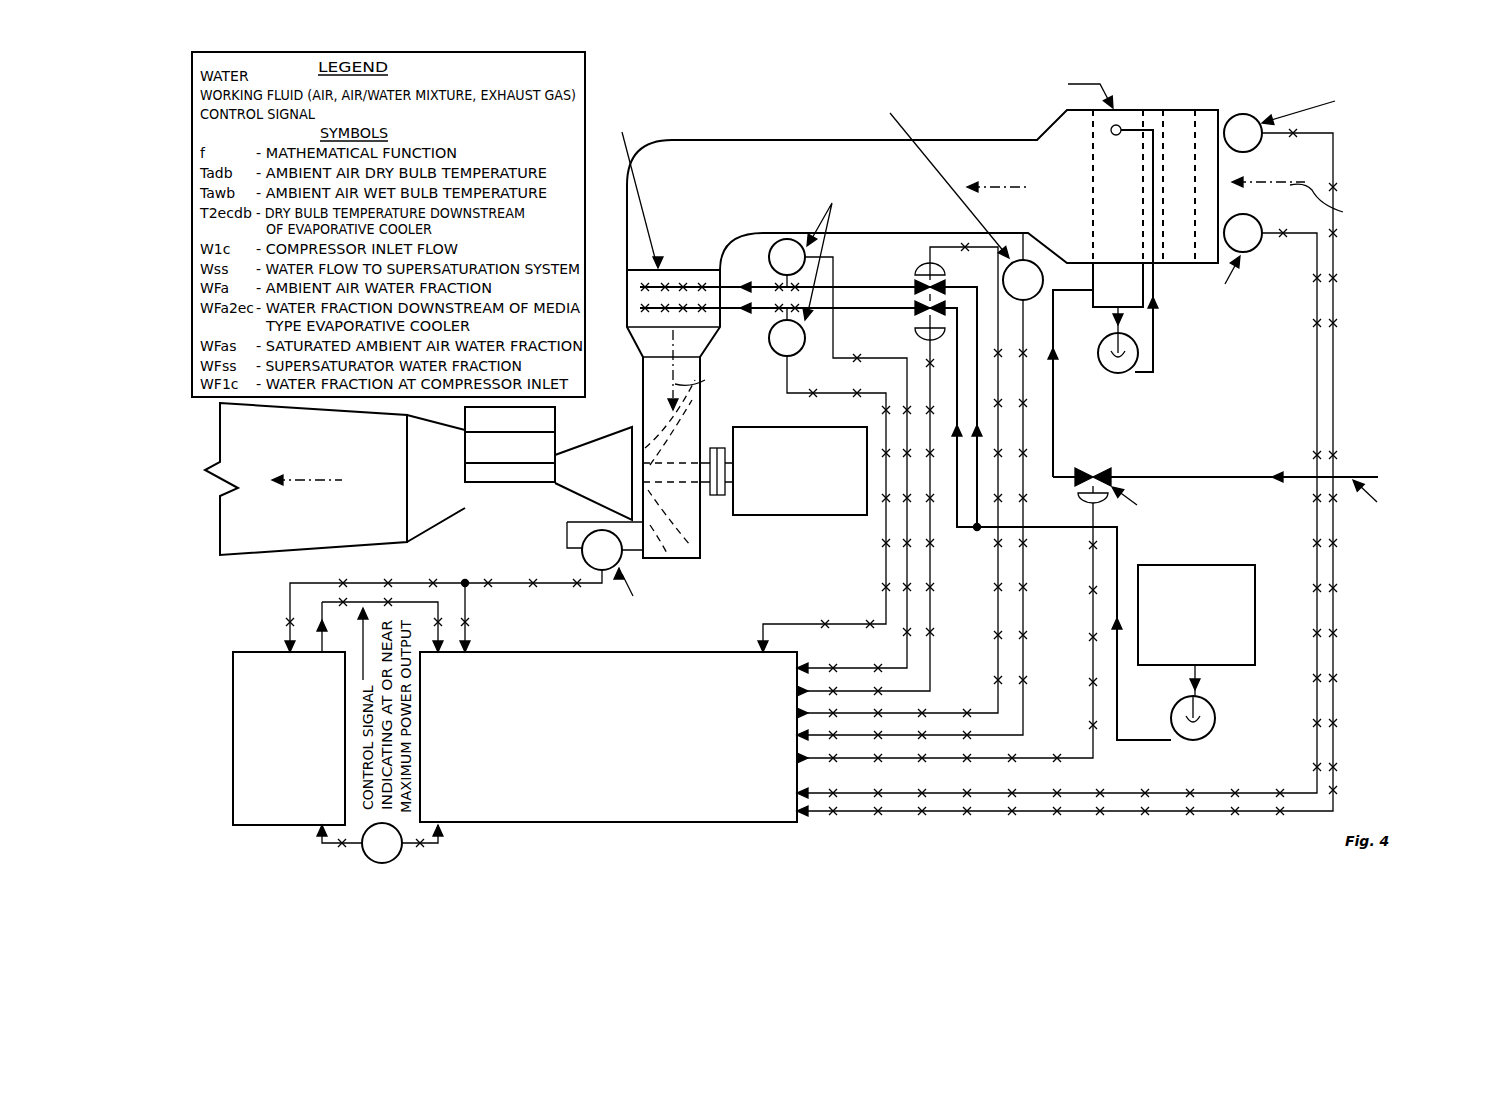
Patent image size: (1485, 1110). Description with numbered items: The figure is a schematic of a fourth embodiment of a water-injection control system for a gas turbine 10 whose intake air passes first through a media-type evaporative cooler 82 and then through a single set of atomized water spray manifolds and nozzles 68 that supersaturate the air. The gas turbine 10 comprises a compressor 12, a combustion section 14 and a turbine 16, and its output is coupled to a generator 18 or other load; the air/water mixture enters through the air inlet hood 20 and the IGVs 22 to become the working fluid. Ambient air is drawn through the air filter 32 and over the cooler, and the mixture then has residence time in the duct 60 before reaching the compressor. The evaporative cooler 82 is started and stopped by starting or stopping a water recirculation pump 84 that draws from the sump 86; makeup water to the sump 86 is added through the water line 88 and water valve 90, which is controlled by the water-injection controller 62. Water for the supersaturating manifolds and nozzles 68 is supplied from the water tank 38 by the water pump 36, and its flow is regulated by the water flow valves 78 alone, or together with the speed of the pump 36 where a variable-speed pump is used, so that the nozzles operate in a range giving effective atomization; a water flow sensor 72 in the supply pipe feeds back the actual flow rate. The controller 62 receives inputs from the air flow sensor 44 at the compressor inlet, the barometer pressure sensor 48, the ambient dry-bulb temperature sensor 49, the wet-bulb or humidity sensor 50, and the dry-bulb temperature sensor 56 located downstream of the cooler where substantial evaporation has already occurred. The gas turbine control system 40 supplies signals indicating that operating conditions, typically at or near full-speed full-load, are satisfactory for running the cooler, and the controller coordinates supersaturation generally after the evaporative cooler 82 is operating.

The gas turbine 10 is at (418, 479).
The compressor 12 is at (608, 478).
The combustion section 14 is at (520, 451).
The turbine 16 is at (446, 487).
The generator 18 is at (815, 509).
The air inlet hood 20 is at (702, 546).
The IGVs 22 is at (645, 433).
The air filter 32 is at (1182, 120).
The water pump 36 is at (1216, 718).
The water tank 38 is at (1206, 659).
The gas turbine control system 40 is at (305, 804).
The air flow sensor 44 is at (622, 565).
The barometer pressure sensor 48 is at (398, 852).
The dry-bulb temperature sensor 49 is at (1238, 114).
The wet-bulb temperature sensor 50 is at (1257, 247).
The dry-bulb temperature sensor 56 is at (1043, 278).
The duct 60 is at (753, 197).
The water-injection controller 62 is at (758, 735).
The manifolds and nozzles 68 is at (640, 297).
The water flow sensor 72 is at (769, 338).
The water flow valves 78 is at (918, 276).
The media-type evaporative cooler 82 is at (1128, 192).
The water recirculation pump 84 is at (1100, 348).
The sump 86 is at (1128, 294).
The water line 88 is at (1220, 477).
The water valve 90 is at (1100, 471).